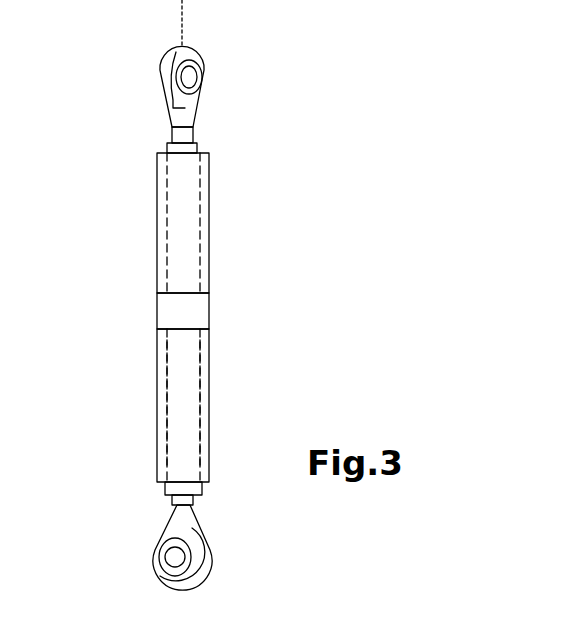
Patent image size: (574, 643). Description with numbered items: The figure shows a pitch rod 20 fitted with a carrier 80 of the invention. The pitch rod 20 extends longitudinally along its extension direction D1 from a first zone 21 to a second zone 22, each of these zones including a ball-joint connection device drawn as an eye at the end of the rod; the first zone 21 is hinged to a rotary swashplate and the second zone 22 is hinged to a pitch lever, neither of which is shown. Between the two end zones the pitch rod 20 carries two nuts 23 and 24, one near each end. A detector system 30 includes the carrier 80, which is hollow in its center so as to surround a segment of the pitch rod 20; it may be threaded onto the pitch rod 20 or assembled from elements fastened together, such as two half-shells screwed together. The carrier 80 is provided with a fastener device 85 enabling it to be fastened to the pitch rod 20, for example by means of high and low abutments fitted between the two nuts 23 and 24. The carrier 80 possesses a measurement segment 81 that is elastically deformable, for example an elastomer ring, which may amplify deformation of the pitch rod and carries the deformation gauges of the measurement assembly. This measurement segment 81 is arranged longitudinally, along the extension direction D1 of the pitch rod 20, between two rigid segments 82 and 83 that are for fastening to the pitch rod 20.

The extension direction D1 is at (160, 0).
The pitch rod 20 is at (190, 378).
The first zone 21 is at (183, 553).
The second zone 22 is at (249, 89).
The nut 23 is at (202, 487).
The nut 24 is at (197, 147).
The detector system 30 is at (207, 317).
The carrier 80 is at (175, 317).
The measurement segment 81 is at (209, 311).
The rigid segment 82 is at (157, 232).
The rigid segment 83 is at (157, 385).
The fastener device 85 is at (166, 150).